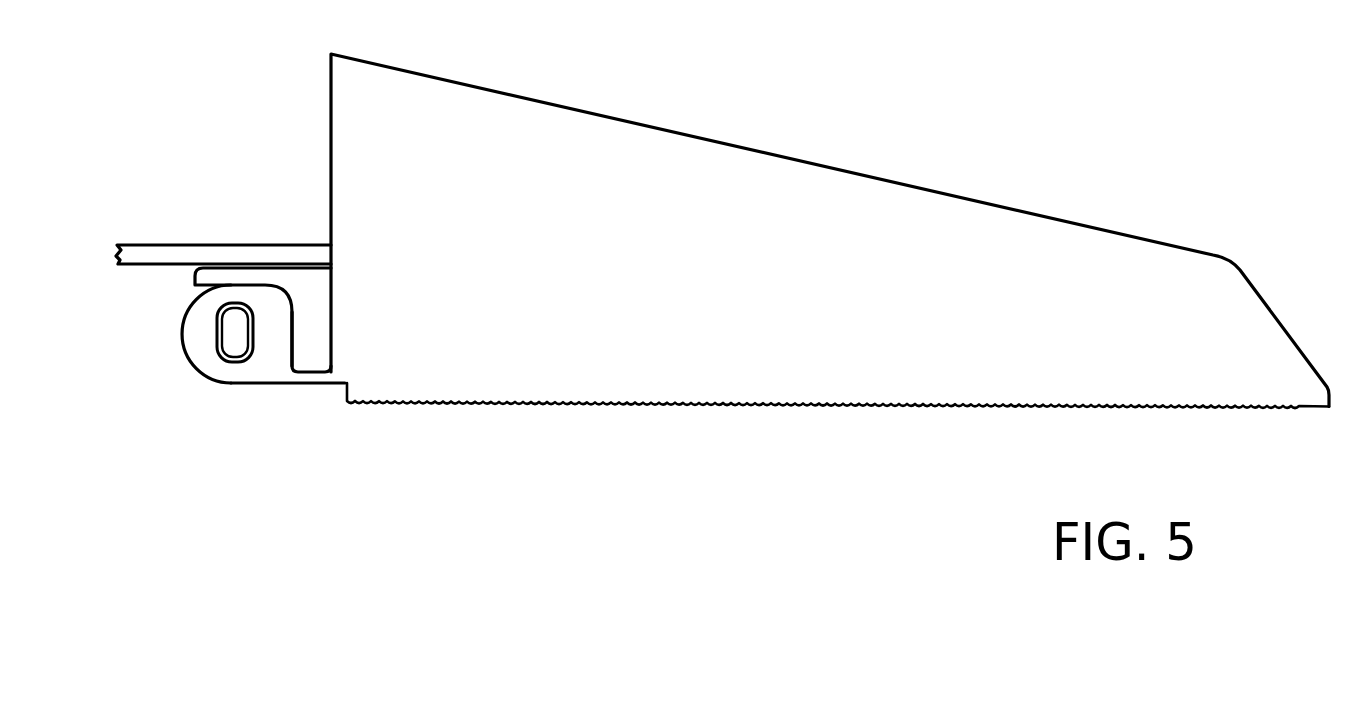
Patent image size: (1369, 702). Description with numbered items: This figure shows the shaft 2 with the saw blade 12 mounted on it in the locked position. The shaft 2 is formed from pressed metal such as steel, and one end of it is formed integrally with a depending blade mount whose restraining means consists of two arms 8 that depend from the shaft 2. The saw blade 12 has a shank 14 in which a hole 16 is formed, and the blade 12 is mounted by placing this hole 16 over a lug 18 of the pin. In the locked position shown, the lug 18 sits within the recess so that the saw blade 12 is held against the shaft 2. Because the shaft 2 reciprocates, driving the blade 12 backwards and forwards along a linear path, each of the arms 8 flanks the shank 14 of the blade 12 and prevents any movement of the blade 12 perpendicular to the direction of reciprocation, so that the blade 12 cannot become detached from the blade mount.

The shaft 2 is at (147, 252).
The arms 8 is at (318, 322).
The saw blade 12 is at (755, 273).
The shank 14 is at (272, 357).
The hole 16 is at (228, 347).
The lug 18 is at (229, 324).